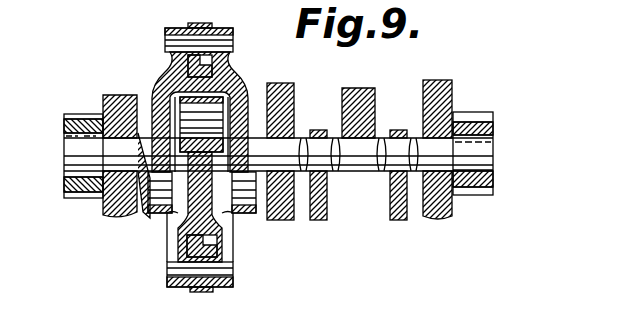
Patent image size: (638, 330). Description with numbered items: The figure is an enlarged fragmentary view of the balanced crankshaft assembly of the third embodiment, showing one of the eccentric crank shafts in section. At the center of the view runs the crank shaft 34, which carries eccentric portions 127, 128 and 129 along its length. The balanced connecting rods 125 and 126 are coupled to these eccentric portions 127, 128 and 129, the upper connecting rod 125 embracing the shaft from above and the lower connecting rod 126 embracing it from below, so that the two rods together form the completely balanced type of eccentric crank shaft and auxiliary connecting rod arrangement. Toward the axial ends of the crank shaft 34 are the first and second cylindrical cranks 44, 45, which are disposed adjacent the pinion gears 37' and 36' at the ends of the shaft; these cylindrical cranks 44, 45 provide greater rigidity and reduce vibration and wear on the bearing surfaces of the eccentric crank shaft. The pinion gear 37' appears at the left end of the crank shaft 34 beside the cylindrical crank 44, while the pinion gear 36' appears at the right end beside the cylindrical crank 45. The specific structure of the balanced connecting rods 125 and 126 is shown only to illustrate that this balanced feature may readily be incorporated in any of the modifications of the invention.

The crank shaft 34 is at (487, 147).
The pinion gear 37' is at (79, 137).
The first cylindrical crank 44 is at (117, 94).
The balanced connecting rod 125 is at (283, 70).
The eccentric portion 127 is at (148, 212).
The eccentric portion 128 is at (234, 214).
The balanced connecting rod 126 is at (234, 250).
The eccentric portion 129 is at (268, 86).
The second cylindrical crank 45 is at (295, 96).
The pinion gear 36' is at (487, 137).